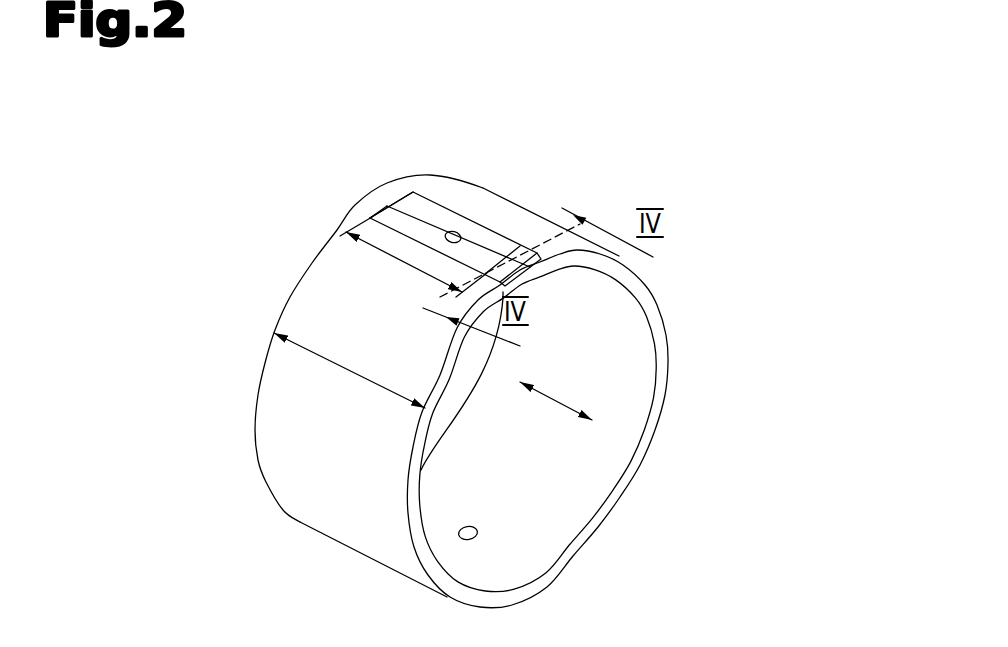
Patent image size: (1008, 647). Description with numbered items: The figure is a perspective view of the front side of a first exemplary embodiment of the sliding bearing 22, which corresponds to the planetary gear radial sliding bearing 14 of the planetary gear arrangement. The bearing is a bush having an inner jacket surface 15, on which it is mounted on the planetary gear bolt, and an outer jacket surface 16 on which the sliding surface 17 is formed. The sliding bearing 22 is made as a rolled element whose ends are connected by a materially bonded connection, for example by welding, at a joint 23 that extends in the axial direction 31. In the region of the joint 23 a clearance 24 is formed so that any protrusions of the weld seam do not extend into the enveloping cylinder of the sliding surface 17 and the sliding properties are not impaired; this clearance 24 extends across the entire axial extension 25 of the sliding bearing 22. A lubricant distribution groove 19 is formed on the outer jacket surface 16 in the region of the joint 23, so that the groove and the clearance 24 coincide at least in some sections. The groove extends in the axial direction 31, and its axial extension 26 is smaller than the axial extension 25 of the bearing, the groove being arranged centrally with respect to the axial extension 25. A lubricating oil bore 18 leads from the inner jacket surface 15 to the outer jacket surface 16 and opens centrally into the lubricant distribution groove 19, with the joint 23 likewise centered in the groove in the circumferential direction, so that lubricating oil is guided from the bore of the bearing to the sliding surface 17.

The planetary gear radial sliding bearing 14 is at (570, 325).
The sliding bearing 22 is at (782, 134).
The inner jacket surface 15 is at (602, 317).
The outer jacket surface 16 is at (499, 210).
The sliding surface 17 is at (540, 245).
The lubricating oil bore 18 is at (458, 231).
The lubricant distribution groove 19 is at (423, 195).
The joint 23 is at (526, 228).
The clearance 24 is at (375, 195).
The axial extension of the sliding bearing 25 is at (352, 385).
The axial extension of the lubricant distribution groove 26 is at (410, 280).
The axial direction 31 is at (557, 387).